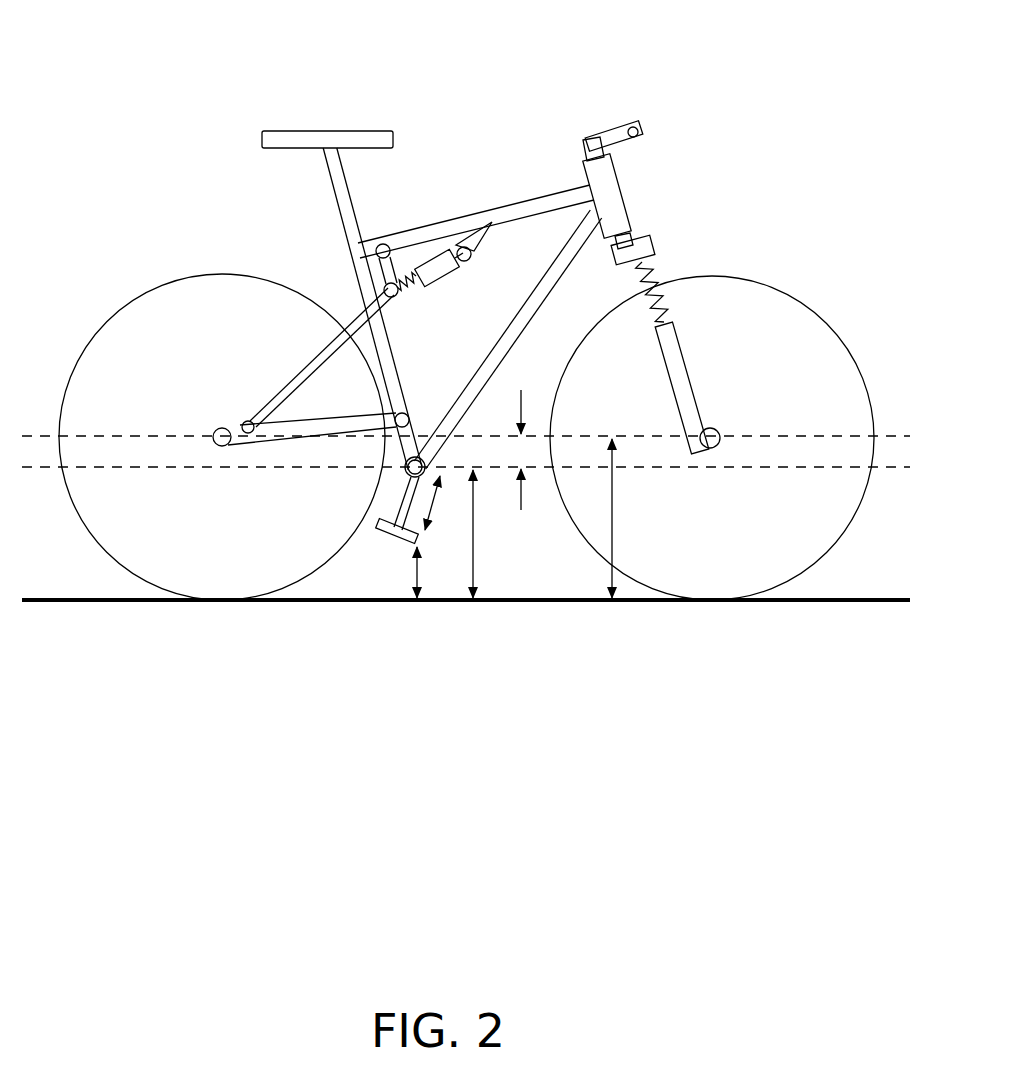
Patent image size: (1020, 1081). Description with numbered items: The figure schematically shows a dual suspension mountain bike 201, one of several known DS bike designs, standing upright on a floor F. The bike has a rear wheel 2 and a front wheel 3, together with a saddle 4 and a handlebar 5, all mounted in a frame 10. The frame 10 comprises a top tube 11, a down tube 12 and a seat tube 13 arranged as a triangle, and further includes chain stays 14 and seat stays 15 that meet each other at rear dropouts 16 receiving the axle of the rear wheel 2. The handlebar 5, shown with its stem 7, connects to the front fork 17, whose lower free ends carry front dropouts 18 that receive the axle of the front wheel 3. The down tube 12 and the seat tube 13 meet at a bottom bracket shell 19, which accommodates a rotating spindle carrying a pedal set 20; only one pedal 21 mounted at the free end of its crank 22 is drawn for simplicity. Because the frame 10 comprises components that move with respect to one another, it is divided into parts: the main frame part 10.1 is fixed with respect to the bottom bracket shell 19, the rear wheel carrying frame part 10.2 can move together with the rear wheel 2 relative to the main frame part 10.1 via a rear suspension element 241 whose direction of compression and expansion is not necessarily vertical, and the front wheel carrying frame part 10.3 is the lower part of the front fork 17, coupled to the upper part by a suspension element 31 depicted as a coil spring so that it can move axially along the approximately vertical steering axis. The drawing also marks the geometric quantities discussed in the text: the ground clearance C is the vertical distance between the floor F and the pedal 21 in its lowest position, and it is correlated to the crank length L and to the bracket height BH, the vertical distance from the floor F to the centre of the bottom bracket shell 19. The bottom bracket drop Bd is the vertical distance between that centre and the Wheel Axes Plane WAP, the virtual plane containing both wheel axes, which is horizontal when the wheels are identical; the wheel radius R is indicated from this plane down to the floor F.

The dual suspension bike 201 is at (199, 72).
The rear wheel 2 is at (146, 290).
The front wheel 3 is at (770, 283).
The saddle 4 is at (355, 128).
The handlebar 5 is at (637, 128).
The stem 7 is at (588, 138).
The frame 10 is at (462, 142).
The main frame part 10.1 is at (539, 186).
The rear wheel carrying frame part 10.2 is at (283, 378).
The front wheel carrying frame part 10.3 is at (698, 376).
The top tube 11 is at (476, 208).
The down tube 12 is at (537, 297).
The seat tube 13 is at (387, 334).
The chain stays 14 is at (300, 432).
The seat stays 15 is at (305, 335).
The rear dropouts 16 is at (214, 430).
The front fork 17 is at (672, 320).
The front dropouts 18 is at (722, 430).
The bottom bracket shell 19 is at (418, 458).
The pedal set 20 is at (325, 634).
The pedal 21 is at (398, 545).
The crank 22 is at (385, 534).
The suspension element 31 is at (660, 272).
The rear suspension element 241 is at (420, 258).
The Wheel Axes Plane WAP is at (112, 437).
The floor F is at (808, 603).
The crank length L is at (434, 503).
The ground clearance C is at (426, 572).
The bracket height BH is at (488, 534).
The bottom bracket drop Bd is at (505, 456).
The wheel radius R is at (620, 518).